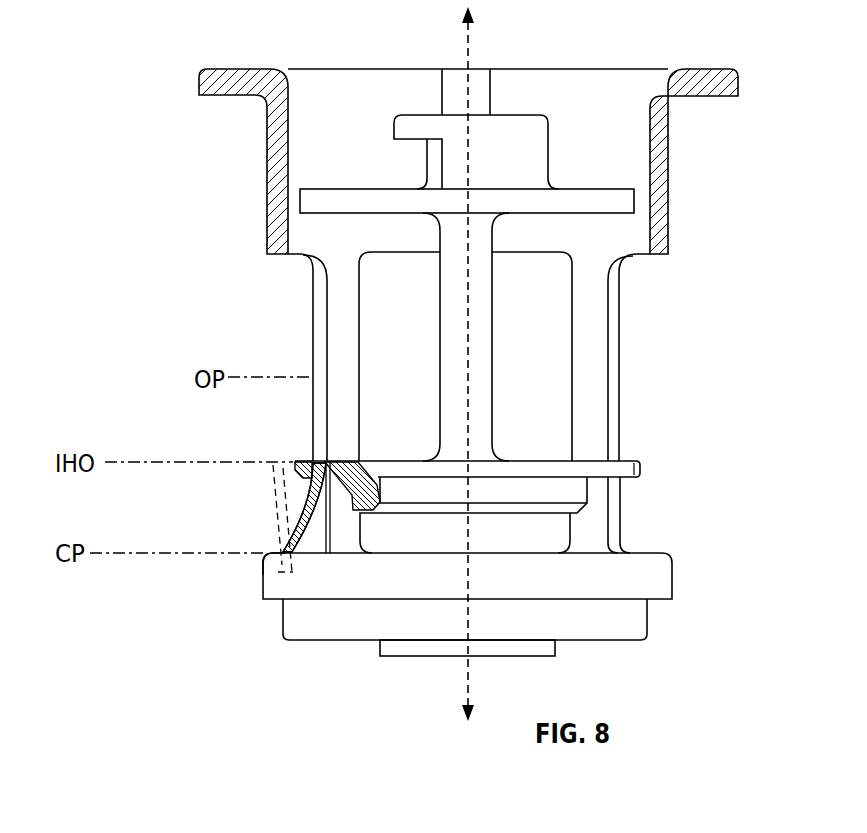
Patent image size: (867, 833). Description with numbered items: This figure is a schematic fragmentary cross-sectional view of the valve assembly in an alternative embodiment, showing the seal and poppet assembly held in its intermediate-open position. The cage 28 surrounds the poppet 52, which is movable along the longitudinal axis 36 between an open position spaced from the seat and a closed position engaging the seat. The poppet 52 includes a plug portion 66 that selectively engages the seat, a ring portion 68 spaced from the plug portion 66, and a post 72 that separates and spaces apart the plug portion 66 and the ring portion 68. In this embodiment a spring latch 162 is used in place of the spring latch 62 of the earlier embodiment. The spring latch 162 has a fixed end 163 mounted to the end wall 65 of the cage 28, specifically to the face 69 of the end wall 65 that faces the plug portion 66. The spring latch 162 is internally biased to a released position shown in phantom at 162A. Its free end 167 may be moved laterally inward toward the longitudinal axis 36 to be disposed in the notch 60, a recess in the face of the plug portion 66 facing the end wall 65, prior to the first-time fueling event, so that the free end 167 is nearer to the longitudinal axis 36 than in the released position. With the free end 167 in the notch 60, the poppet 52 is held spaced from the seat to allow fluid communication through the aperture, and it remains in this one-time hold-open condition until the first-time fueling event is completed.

The longitudinal axis 36 is at (469, 50).
The cage 28 is at (277, 175).
The spring latch 62 is at (658, 215).
The ring portion 68 is at (593, 203).
The post 72 is at (467, 368).
The poppet 52 is at (548, 415).
The plug portion 66 is at (630, 460).
The end wall 65 is at (643, 575).
The face 69 is at (341, 543).
The free end 167 is at (327, 460).
The notch 60 is at (289, 516).
The spring latch 162 is at (305, 520).
The released position 162A is at (270, 489).
The fixed end 163 is at (266, 570).